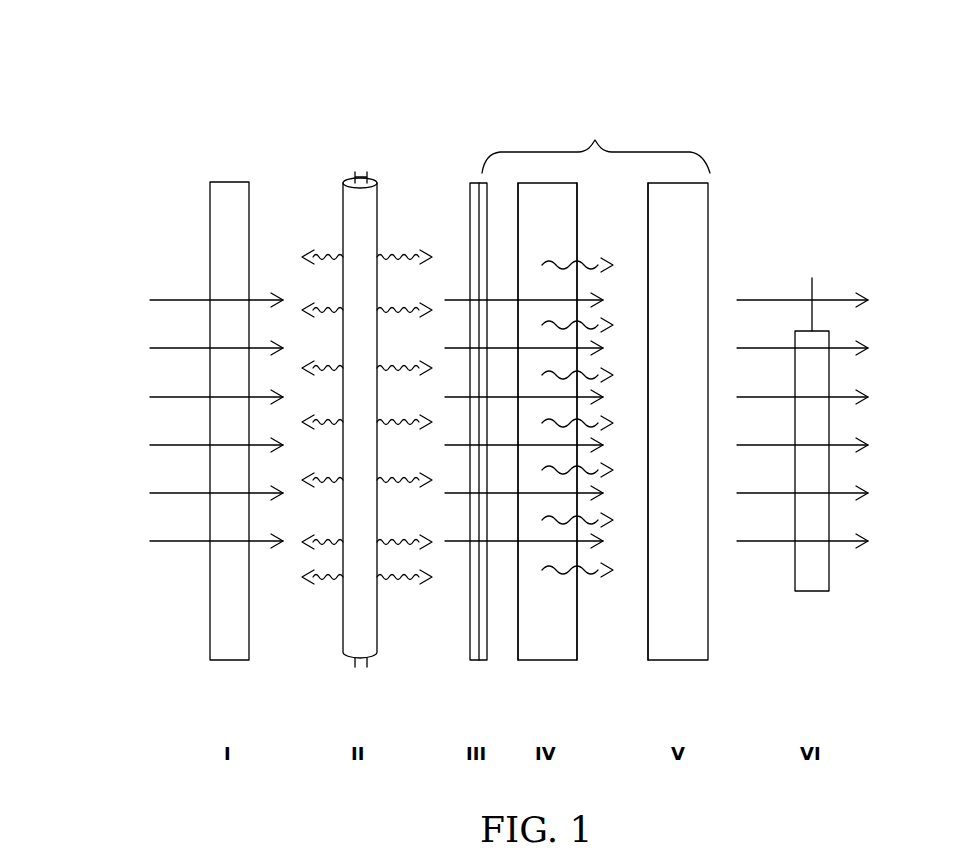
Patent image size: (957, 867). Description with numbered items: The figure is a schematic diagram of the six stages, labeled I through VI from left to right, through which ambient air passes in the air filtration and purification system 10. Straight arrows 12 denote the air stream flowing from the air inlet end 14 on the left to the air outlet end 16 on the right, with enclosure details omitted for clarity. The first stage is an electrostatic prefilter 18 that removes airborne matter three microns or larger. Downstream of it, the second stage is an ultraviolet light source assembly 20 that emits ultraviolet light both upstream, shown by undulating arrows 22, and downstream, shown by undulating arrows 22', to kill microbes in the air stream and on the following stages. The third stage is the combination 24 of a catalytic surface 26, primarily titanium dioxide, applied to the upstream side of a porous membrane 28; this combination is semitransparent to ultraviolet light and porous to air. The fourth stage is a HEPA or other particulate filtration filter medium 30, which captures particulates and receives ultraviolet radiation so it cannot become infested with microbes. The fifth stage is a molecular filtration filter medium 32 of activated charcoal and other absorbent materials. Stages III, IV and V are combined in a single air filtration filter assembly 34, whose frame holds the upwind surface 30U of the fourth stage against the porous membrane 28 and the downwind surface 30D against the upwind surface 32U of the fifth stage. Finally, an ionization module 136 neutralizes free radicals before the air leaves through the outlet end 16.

The air filtration and purification system 10 is at (290, 78).
The straight arrows 12 is at (176, 347).
The air inlet end 14 is at (109, 389).
The air outlet end 16 is at (936, 407).
The electrostatic prefilter 18 is at (232, 215).
The ultraviolet light source assembly 20 is at (356, 197).
The undulating arrows 22 is at (295, 361).
The undulating arrows 22' is at (491, 378).
The combination 24 is at (479, 183).
The catalytic surface 26 is at (471, 230).
The porous membrane 28 is at (483, 653).
The particulate filtration filter medium 30 is at (540, 640).
The upwind surface 30U is at (518, 208).
The downwind surface 30D is at (578, 225).
The molecular filtration filter medium 32 is at (675, 630).
The upwind surface 32U is at (648, 642).
The air filtration filter assembly 34 is at (596, 145).
The ionization module 136 is at (810, 580).